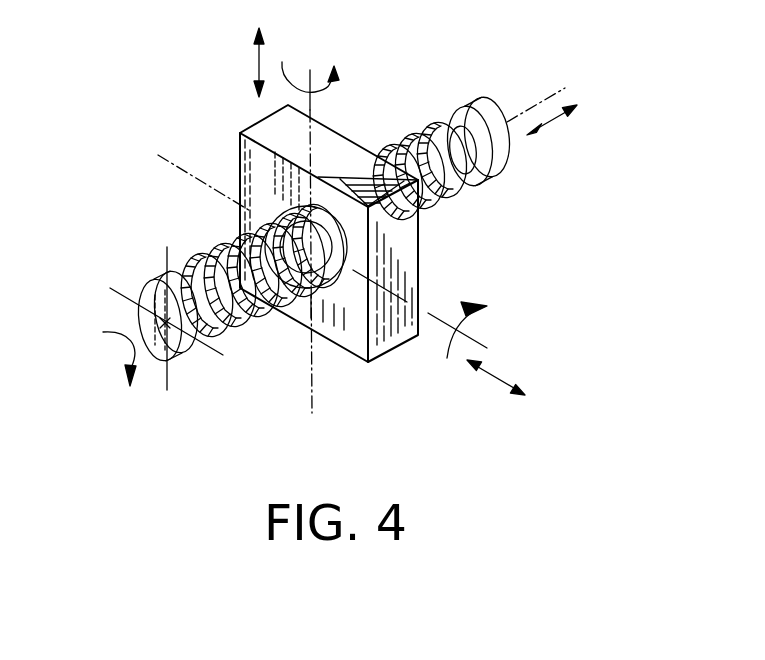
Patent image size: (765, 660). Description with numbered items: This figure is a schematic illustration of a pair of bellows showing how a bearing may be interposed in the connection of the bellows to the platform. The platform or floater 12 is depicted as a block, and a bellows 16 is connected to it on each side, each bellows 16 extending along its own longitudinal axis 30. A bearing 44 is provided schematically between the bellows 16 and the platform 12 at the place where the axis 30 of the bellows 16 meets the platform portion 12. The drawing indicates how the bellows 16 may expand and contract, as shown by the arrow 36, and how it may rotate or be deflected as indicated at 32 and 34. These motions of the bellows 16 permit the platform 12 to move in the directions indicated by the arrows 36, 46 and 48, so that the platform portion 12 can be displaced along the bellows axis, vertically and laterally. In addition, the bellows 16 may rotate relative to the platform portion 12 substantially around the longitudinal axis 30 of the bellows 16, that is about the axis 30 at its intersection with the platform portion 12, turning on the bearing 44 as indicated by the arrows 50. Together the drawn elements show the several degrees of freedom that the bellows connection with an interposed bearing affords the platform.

The platform 12 is at (385, 355).
The bellows 16 is at (227, 247).
The longitudinal axis 30 is at (145, 310).
The rotation or deflection indication 32 is at (282, 62).
The rotation or deflection indication 34 is at (428, 340).
The arrow 36 is at (553, 122).
The bearing 44 is at (317, 210).
The arrow 46 is at (255, 63).
The arrow 48 is at (497, 373).
The arrows 50 is at (103, 332).